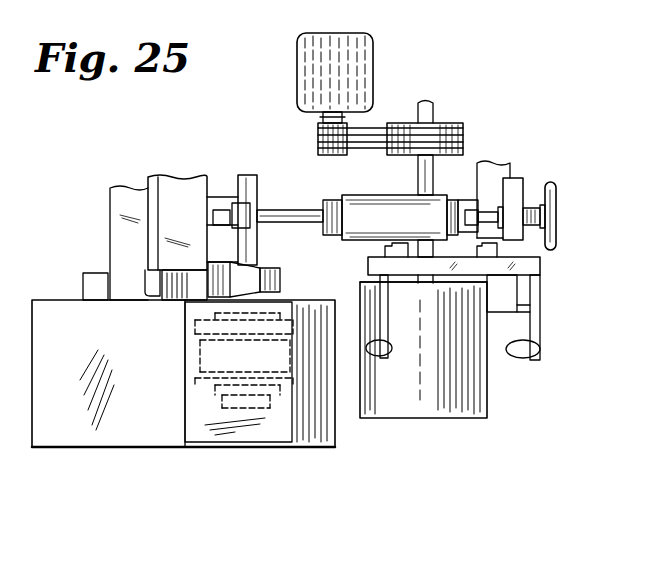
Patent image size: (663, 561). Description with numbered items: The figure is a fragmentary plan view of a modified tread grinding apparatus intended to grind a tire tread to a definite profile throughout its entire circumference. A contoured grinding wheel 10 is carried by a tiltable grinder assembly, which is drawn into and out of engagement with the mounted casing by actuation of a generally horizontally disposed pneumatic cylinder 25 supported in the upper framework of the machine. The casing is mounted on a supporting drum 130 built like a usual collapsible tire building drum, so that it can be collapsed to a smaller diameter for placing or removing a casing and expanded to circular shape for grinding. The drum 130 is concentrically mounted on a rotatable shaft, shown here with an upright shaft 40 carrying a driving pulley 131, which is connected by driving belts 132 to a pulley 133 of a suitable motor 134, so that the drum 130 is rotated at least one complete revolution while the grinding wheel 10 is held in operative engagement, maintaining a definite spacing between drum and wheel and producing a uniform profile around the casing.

The grinding wheel 10 is at (213, 377).
The pneumatic cylinder 25 is at (371, 200).
The shaft 40 is at (433, 108).
The supporting drum 130 is at (458, 410).
The driving pulley 131 is at (463, 126).
The driving belts 132 is at (373, 130).
The pulley 133 is at (318, 153).
The motor 134 is at (362, 68).